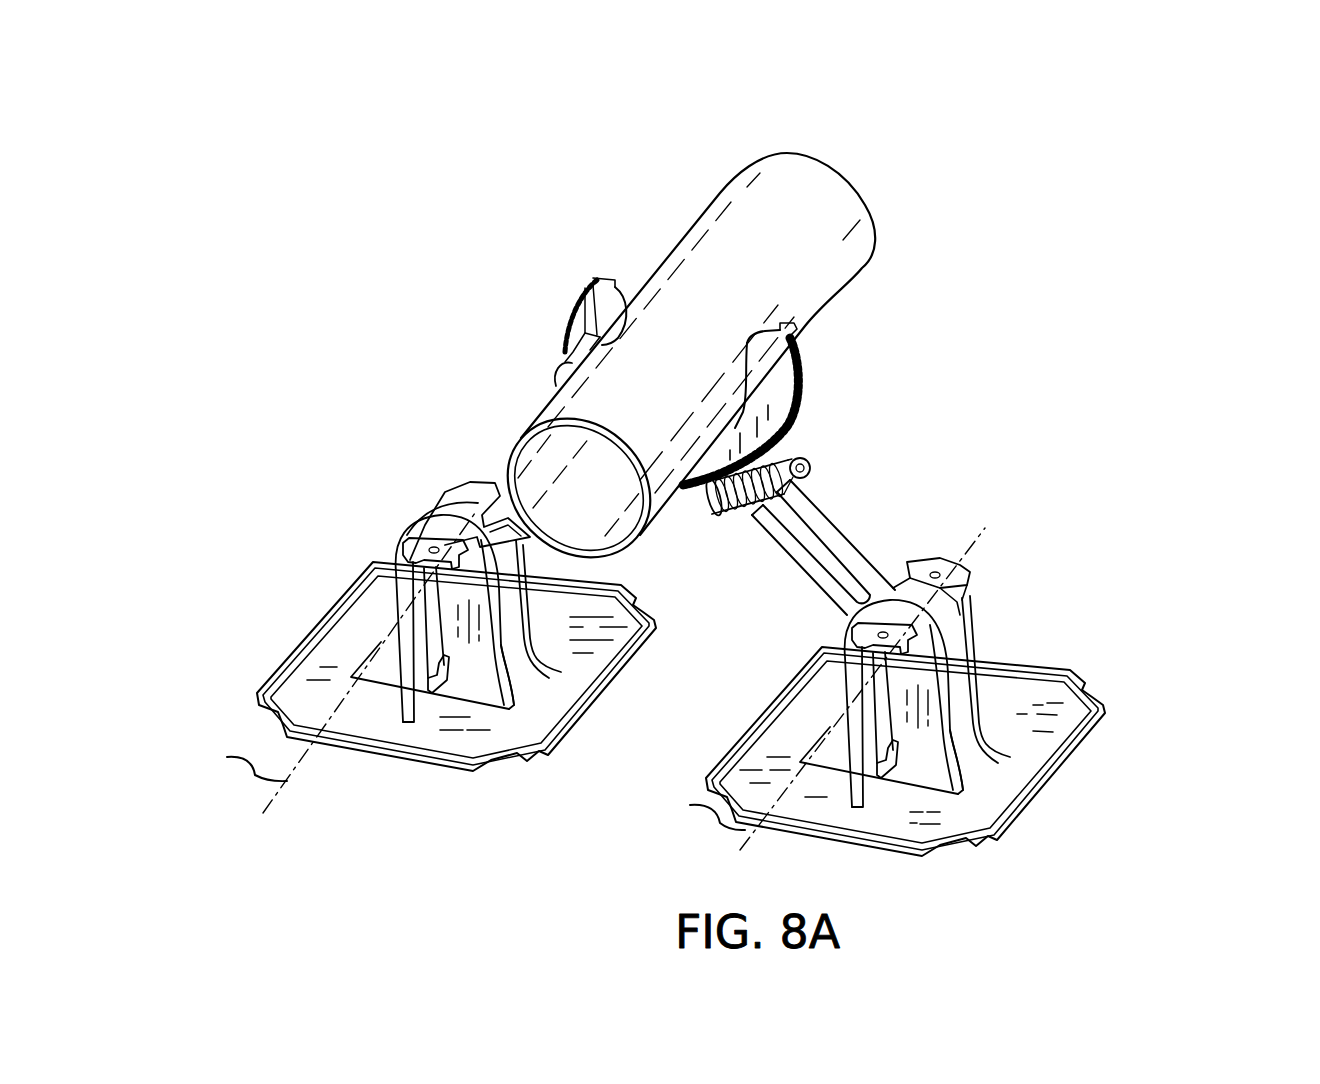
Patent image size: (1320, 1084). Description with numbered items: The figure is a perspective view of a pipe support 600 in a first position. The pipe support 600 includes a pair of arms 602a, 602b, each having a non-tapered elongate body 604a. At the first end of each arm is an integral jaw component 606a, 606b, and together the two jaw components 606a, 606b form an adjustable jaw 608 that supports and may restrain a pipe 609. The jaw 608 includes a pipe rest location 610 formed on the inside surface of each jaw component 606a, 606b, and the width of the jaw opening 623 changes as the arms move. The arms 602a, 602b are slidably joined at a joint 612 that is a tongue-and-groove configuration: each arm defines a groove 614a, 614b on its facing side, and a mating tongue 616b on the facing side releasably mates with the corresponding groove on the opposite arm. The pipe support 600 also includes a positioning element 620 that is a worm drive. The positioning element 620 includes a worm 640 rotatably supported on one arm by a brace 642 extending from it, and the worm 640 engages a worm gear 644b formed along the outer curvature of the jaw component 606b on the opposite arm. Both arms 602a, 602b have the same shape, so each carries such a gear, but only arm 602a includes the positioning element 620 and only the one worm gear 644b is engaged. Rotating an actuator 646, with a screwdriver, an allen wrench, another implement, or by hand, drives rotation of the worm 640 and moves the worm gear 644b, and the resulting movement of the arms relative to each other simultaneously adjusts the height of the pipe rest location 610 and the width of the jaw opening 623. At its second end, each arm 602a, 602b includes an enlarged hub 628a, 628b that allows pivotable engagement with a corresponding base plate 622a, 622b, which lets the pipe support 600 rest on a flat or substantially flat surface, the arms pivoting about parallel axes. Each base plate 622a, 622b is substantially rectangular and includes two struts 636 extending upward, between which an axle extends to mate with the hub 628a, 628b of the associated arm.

The pipe support 600 is at (1158, 108).
The jaw opening 623 is at (669, 138).
The pipe 609 is at (800, 153).
The jaw component 606a is at (600, 282).
The jaw component 606b is at (797, 345).
The adjustable jaw 608 is at (527, 304).
The joint 612 is at (527, 367).
The groove 614a is at (628, 261).
The groove 614b is at (765, 317).
The mating tongue 616b is at (608, 343).
The pipe rest location 610 is at (717, 404).
The worm gear 644b is at (806, 385).
The positioning element 620 is at (845, 437).
The brace 642 is at (713, 503).
The actuator 646 is at (812, 477).
The worm 640 is at (747, 517).
The non-tapered elongate body 604a is at (850, 547).
The arm 602a is at (890, 574).
The arm 602b is at (490, 500).
The enlarged hub 628a is at (953, 623).
The enlarged hub 628b is at (415, 537).
The base plate 622a is at (1057, 757).
The base plate 622b is at (268, 681).
The struts 636 is at (492, 650).